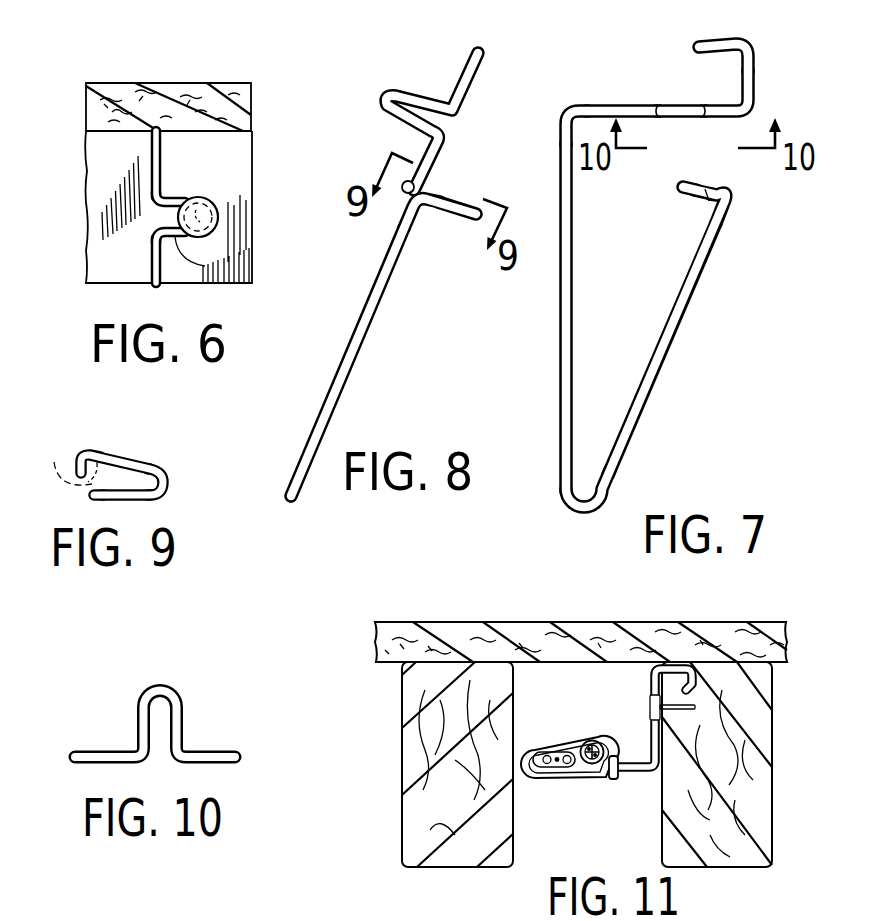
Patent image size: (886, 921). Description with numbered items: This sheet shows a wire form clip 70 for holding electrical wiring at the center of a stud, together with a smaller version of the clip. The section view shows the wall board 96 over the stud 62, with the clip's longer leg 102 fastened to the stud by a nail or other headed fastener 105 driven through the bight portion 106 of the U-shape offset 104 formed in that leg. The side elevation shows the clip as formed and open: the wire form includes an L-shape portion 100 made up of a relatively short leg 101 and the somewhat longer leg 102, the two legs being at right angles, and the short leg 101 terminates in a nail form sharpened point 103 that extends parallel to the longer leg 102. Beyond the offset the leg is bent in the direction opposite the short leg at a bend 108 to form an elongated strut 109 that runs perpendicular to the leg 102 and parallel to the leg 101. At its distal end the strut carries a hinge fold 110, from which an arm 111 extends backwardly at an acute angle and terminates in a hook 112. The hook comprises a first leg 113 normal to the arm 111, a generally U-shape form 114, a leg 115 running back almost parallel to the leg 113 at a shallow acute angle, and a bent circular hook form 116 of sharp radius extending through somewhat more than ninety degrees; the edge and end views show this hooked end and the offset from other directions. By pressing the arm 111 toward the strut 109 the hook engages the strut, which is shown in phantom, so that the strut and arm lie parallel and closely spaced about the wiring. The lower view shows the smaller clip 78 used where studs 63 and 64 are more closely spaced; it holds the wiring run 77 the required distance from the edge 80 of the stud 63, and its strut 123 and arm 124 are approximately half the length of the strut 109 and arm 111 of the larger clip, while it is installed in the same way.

In FIG. 6, the wall board 96 is at (192, 86).
In FIG. 11, the wall board 96 is at (585, 622).
In FIG. 6, the stud 62 is at (237, 147).
In FIG. 6, the longer leg 102 is at (160, 163).
In FIG. 10, the longer leg 102 is at (213, 748).
In FIG. 8, the longer leg 102 is at (388, 94).
In FIG. 7, the longer leg 102 is at (665, 72).
In FIG. 6, the U-shape offset 104 is at (203, 266).
In FIG. 10, the U-shape offset 104 is at (173, 687).
In FIG. 7, the U-shape offset 104 is at (681, 117).
In FIG. 6, the fastener 105 is at (217, 228).
In FIG. 10, the bight portion 106 is at (156, 710).
In FIG. 8, the wire form clip 70 is at (382, 355).
In FIG. 7, the wire form clip 70 is at (638, 345).
In FIG. 7, the L-shape portion 100 is at (742, 58).
In FIG. 7, the short leg 101 is at (757, 67).
In FIG. 7, the sharpened point 103 is at (706, 45).
In FIG. 7, the bend 108 is at (564, 110).
In FIG. 9, the strut 109 is at (66, 462).
In FIG. 7, the strut 109 is at (558, 312).
In FIG. 8, the hinge fold 110 is at (288, 499).
In FIG. 7, the hinge fold 110 is at (581, 514).
In FIG. 9, the arm 111 is at (92, 497).
In FIG. 8, the arm 111 is at (360, 356).
In FIG. 7, the arm 111 is at (668, 358).
In FIG. 8, the hook 112 is at (458, 185).
In FIG. 7, the hook 112 is at (731, 194).
In FIG. 9, the first leg of hook 113 is at (123, 502).
In FIG. 8, the first leg of hook 113 is at (448, 213).
In FIG. 7, the first leg of hook 113 is at (727, 208).
In FIG. 9, the U-shape form 114 is at (167, 474).
In FIG. 8, the U-shape form 114 is at (478, 225).
In FIG. 7, the U-shape form 114 is at (718, 190).
In FIG. 9, the second leg of hook 115 is at (121, 458).
In FIG. 9, the circular hook form 116 is at (84, 450).
In FIG. 8, the circular hook form 116 is at (404, 192).
In FIG. 7, the circular hook form 116 is at (683, 186).
In FIG. 11, the edge of stud 80 is at (646, 671).
In FIG. 11, the wiring run 77 is at (565, 742).
In FIG. 11, the strut 123 is at (552, 780).
In FIG. 11, the arm 124 is at (607, 710).
In FIG. 11, the wire form clip 78 is at (604, 788).
In FIG. 11, the stud 64 is at (503, 835).
In FIG. 11, the stud 63 is at (758, 823).